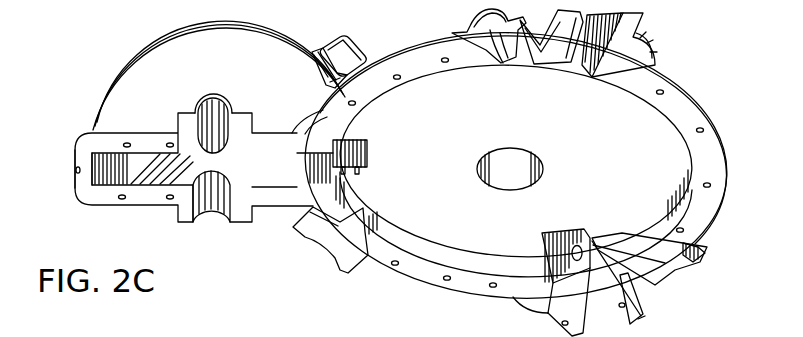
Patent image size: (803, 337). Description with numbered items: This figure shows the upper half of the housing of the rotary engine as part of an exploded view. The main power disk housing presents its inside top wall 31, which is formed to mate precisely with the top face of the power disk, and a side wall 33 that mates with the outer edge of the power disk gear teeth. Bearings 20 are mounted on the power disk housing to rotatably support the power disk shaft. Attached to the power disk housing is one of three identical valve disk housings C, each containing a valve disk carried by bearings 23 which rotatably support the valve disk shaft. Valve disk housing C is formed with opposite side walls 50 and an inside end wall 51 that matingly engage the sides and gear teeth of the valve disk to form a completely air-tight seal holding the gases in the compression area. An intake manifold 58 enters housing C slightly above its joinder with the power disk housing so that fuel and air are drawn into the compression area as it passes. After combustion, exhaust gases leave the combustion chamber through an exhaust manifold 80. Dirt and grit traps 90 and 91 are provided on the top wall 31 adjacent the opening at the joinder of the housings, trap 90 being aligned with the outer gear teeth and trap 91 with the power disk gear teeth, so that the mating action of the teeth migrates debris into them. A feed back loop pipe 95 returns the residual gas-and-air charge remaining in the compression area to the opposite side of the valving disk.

The valve disk housing C is at (243, 33).
The bearings 20 is at (508, 163).
The bearings 23 is at (213, 107).
The top wall 31 is at (479, 127).
The side wall 33 is at (648, 225).
The opposite side wall 50 is at (140, 167).
The inside end wall 51 is at (93, 164).
The intake manifold 58 is at (355, 45).
The exhaust manifold 80 is at (503, 62).
The trap 90 is at (363, 170).
The trap 91 is at (350, 150).
The feed back loop pipe 95 is at (579, 262).